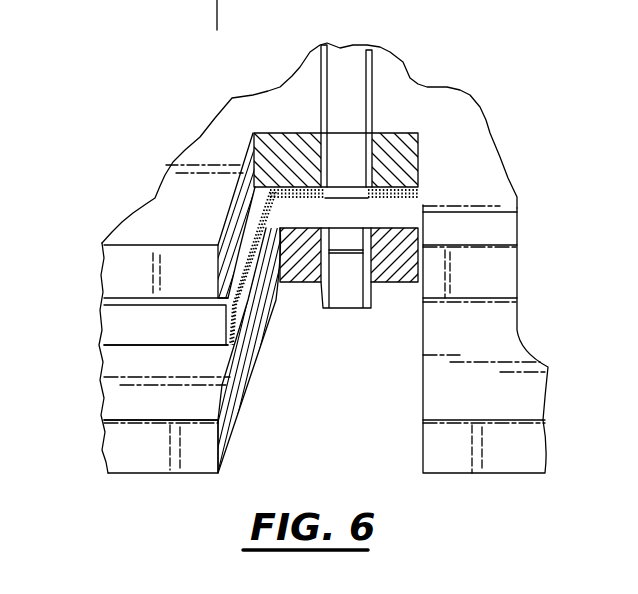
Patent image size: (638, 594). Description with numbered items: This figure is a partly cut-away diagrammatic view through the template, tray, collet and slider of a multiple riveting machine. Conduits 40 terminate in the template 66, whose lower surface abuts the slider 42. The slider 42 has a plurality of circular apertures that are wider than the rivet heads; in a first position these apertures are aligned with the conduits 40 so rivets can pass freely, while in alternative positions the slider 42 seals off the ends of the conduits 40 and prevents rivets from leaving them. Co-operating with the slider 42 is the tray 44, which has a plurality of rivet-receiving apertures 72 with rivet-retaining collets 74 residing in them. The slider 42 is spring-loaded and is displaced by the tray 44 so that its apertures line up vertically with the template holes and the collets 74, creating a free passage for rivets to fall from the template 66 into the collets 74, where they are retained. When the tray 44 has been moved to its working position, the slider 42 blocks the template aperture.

The conduit 40 is at (358, 75).
The template 66 is at (130, 262).
The slider 42 is at (153, 328).
The tray 44 is at (131, 450).
The rivet-receiving aperture 72 is at (324, 309).
The rivet-retaining collet 74 is at (352, 297).